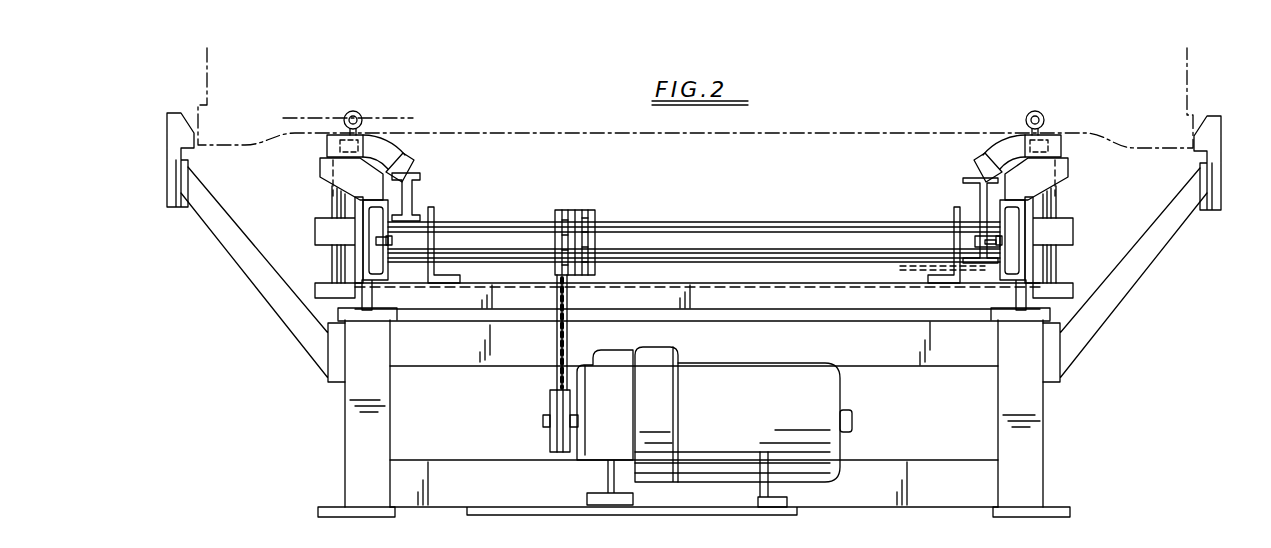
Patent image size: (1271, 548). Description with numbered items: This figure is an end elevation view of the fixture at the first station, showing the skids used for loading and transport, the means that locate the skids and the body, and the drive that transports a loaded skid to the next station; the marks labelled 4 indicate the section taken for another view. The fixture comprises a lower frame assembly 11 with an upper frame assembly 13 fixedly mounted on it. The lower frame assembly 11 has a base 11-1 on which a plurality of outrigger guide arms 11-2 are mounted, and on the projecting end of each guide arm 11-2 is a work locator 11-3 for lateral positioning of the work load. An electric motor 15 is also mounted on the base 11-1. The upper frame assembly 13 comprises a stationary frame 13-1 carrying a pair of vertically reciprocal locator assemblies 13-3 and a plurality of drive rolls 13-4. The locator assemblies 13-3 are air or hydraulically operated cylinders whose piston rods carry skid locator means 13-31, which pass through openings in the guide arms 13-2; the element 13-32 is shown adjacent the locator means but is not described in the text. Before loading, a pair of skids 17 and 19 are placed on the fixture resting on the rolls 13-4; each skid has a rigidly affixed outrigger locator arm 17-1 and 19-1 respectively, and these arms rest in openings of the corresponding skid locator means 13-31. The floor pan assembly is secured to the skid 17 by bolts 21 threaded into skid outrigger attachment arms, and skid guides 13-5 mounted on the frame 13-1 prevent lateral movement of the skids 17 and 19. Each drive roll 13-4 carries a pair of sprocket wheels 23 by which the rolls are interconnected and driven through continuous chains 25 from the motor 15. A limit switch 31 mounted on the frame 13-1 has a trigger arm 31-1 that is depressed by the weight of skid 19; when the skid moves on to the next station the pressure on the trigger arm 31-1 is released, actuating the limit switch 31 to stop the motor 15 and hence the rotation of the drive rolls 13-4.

The section line 4- 4 is at (390, 118).
The lower frame assembly 11 is at (1043, 467).
The base 11-1 is at (1030, 405).
The outrigger guide arms 11-2 is at (243, 243).
The work locators 11-3 is at (178, 176).
The upper frame assembly 13 is at (1076, 235).
The stationary frame 13-1 is at (718, 296).
The guide arms 13-2 is at (320, 170).
The locator assemblies 13-3 is at (333, 228).
The skid locator means 13-31 is at (325, 150).
The lower clamp block 13-32 is at (1040, 178).
The drive rolls 13-4 is at (512, 236).
The skid guides 13-5 is at (437, 213).
The electric motor 15 is at (815, 423).
The skid 17 is at (412, 213).
The outrigger locator arm 17-1 is at (378, 142).
The skid 19 is at (978, 193).
The outrigger locator arm 19-1 is at (1008, 142).
The bolts 21 is at (352, 110).
The sprocket wheels 23 is at (600, 213).
The continuous chains 25 is at (592, 248).
The limit switch 31 is at (935, 260).
The trigger arm 31-1 is at (945, 228).